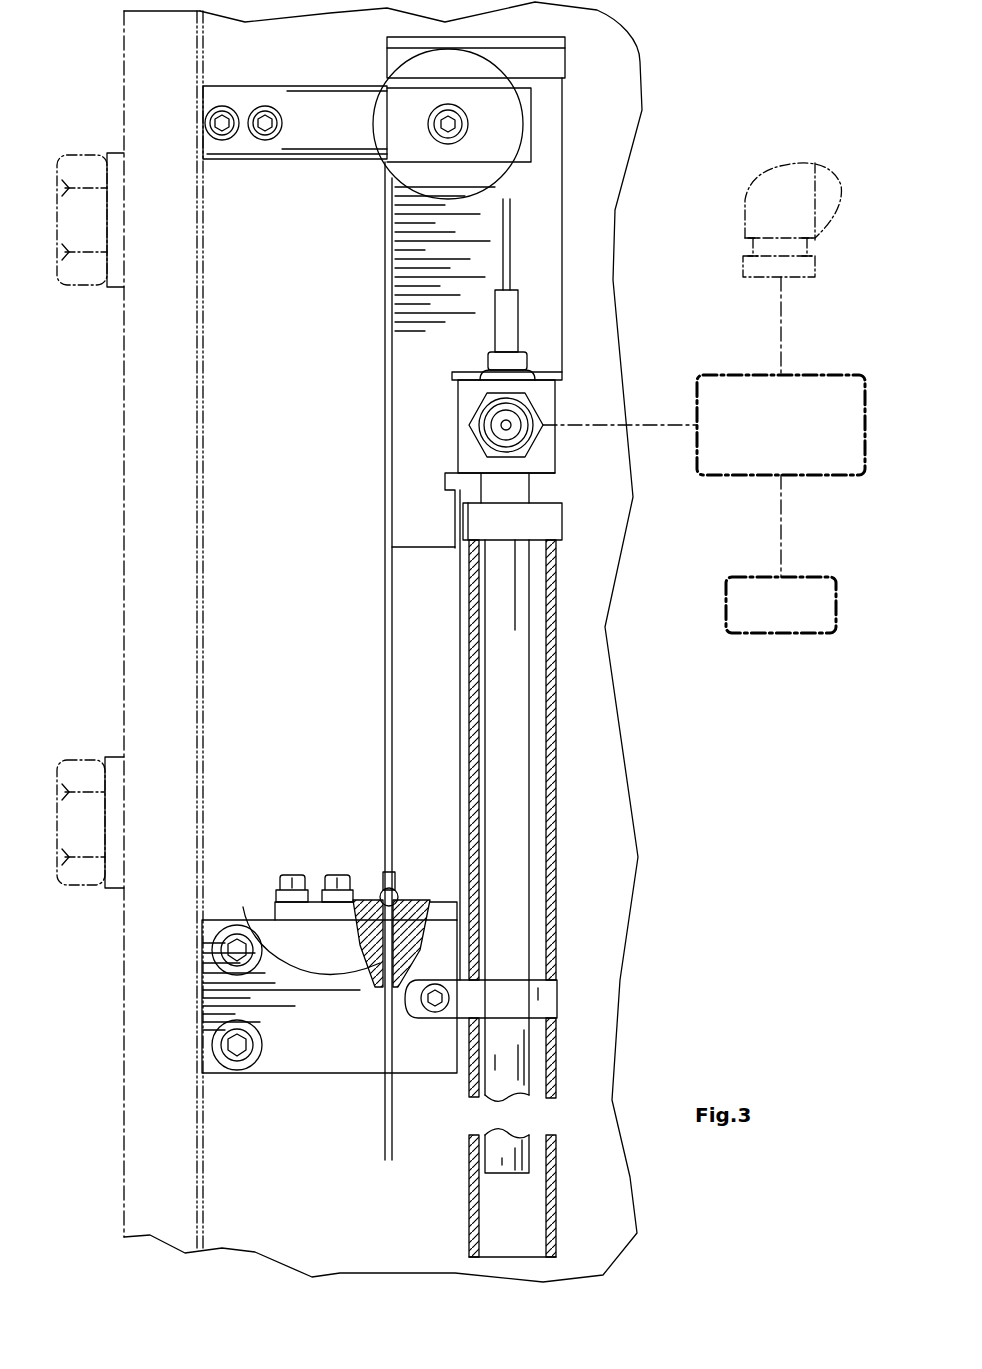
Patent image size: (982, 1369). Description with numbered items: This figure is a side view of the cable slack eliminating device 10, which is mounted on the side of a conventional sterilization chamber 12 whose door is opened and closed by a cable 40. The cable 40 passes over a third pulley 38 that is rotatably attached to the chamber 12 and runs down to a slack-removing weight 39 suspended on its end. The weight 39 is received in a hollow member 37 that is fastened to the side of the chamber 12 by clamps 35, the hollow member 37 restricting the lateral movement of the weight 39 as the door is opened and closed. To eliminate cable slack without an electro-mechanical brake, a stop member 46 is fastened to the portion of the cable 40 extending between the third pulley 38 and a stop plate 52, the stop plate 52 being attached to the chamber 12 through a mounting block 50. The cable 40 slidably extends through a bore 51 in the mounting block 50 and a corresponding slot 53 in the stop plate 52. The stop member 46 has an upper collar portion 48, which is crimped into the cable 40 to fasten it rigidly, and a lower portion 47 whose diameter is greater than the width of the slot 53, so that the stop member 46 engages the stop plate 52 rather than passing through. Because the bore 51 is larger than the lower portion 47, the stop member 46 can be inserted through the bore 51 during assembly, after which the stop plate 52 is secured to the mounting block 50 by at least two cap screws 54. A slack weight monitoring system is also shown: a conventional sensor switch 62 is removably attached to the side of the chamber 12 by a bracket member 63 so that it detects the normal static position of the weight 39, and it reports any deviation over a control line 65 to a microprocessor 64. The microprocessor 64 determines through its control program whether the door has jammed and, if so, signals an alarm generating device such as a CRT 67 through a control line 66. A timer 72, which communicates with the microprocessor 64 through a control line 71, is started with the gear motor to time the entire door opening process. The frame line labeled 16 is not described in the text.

The cable slack eliminating device 10 is at (105, 1132).
The sterilization chamber 12 is at (552, 31).
The support post 16 is at (172, 451).
The clamps 35 is at (538, 518).
The hollow member 37 is at (560, 918).
The third pulley 38 is at (460, 91).
The slack-removing weight 39 is at (521, 839).
The cable 40 is at (388, 325).
The stop member 46 is at (375, 868).
The lower portion 47 is at (393, 890).
The upper collar portion 48 is at (393, 872).
The mounting block 50 is at (338, 1063).
The bore 51 is at (301, 930).
The stop plate 52 is at (278, 907).
The slot 53 is at (400, 897).
The cap screws 54 is at (292, 875).
The sensor switch 62 is at (523, 448).
The bracket member 63 is at (540, 395).
The microprocessor 64 is at (796, 445).
The control line 65 is at (647, 427).
The control line 66 is at (782, 346).
The CRT 67 is at (796, 224).
The control line 71 is at (782, 540).
The timer 72 is at (789, 622).